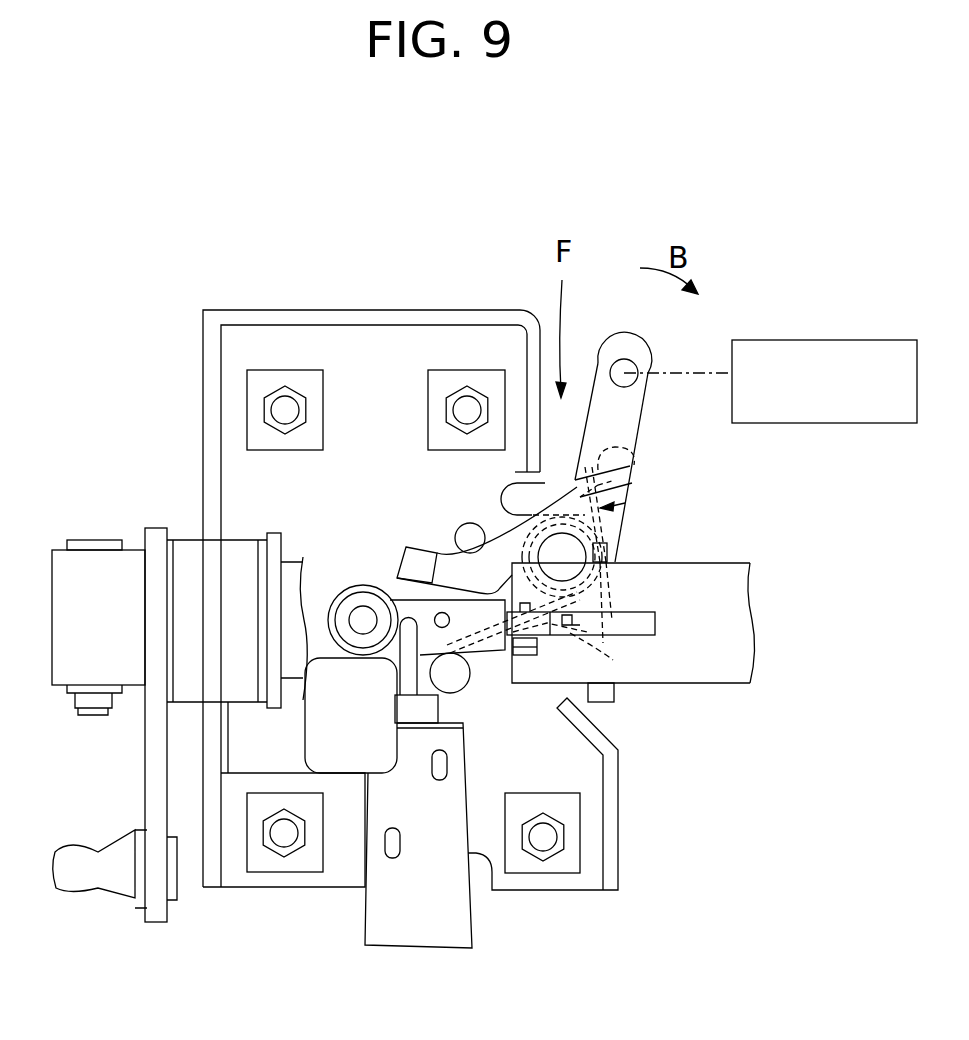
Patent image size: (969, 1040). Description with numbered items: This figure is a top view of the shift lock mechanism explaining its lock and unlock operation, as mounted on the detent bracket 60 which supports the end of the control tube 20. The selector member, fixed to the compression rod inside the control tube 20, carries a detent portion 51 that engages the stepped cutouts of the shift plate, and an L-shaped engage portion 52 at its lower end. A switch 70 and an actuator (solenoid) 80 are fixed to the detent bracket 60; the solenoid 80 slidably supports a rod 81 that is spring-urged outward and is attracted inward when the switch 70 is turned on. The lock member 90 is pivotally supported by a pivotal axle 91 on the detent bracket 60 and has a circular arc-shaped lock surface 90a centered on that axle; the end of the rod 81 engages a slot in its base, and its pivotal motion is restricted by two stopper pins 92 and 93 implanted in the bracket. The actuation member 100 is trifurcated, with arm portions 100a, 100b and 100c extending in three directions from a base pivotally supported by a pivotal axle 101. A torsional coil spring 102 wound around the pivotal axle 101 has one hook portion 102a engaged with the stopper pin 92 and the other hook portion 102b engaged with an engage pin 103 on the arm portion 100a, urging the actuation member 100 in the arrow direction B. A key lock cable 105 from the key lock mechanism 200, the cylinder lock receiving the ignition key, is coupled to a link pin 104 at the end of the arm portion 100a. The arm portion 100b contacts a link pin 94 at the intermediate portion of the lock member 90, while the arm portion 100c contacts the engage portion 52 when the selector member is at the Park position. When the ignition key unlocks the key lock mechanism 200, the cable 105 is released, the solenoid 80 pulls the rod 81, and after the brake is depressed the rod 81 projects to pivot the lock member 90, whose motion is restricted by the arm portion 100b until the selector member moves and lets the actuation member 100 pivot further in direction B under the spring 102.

The control tube 20 is at (735, 673).
The detent portion 51 is at (658, 614).
The engage portion 52 is at (545, 640).
The detent bracket 60 is at (355, 309).
The switch 70 is at (320, 764).
The actuator (solenoid) 80 is at (427, 950).
The rod 81 is at (408, 618).
The lock member 90 is at (485, 651).
The lock surface 90a is at (507, 650).
The pivotal axle 91 is at (358, 613).
The stopper pin 92 is at (452, 688).
The stopper pin 93 is at (470, 523).
The link pin 94 is at (433, 577).
The actuation member 100 is at (687, 422).
The arm portion 100a is at (646, 397).
The arm portion 100b is at (410, 573).
The arm portion 100c is at (657, 634).
The pivotal axle 101 is at (595, 576).
The torsional coil spring 102 is at (618, 518).
The hook portion 102a is at (430, 676).
The hook portion 102b is at (606, 456).
The engage pin 103 is at (620, 505).
The link pin 104 is at (620, 356).
The key lock cable 105 is at (656, 370).
The key lock mechanism 200 is at (858, 340).